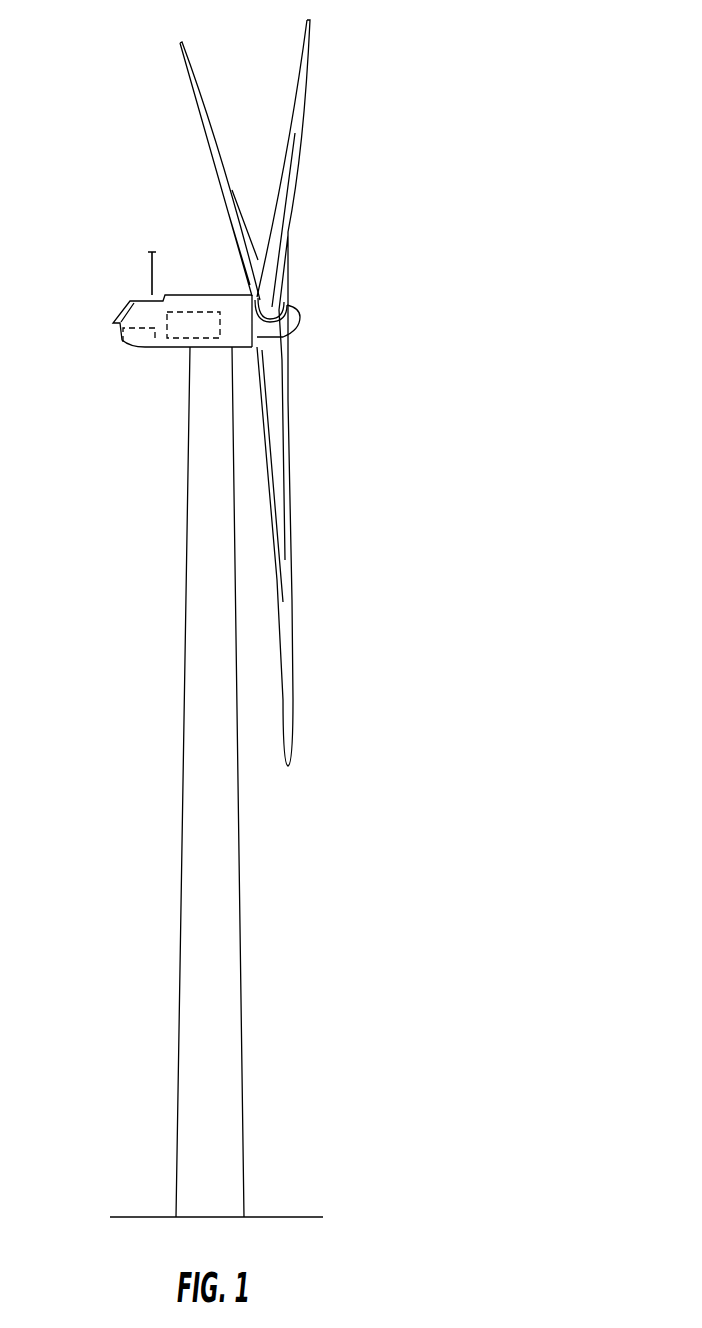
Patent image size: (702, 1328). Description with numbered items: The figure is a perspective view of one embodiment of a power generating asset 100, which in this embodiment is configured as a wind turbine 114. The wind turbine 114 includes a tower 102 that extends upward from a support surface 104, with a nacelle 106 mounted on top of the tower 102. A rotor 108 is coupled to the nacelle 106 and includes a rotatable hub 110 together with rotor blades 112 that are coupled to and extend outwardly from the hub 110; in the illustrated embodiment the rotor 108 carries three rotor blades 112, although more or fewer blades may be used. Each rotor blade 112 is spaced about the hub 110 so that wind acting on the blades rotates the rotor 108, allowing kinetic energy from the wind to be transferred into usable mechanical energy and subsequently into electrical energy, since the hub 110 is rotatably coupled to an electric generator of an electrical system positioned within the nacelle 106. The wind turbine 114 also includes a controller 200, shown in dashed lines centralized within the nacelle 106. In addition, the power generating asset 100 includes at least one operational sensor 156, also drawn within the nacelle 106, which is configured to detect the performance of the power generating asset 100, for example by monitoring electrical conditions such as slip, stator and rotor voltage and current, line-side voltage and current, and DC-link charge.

The power generating asset 100 is at (448, 116).
The wind turbine 114 is at (308, 618).
The tower 102 is at (222, 853).
The support surface 104 is at (283, 1217).
The nacelle 106 is at (157, 348).
The rotor 108 is at (349, 270).
The rotatable hub 110 is at (300, 316).
The rotor blade 112 is at (288, 137).
The operational sensor 156 is at (128, 338).
The controller 200 is at (183, 310).